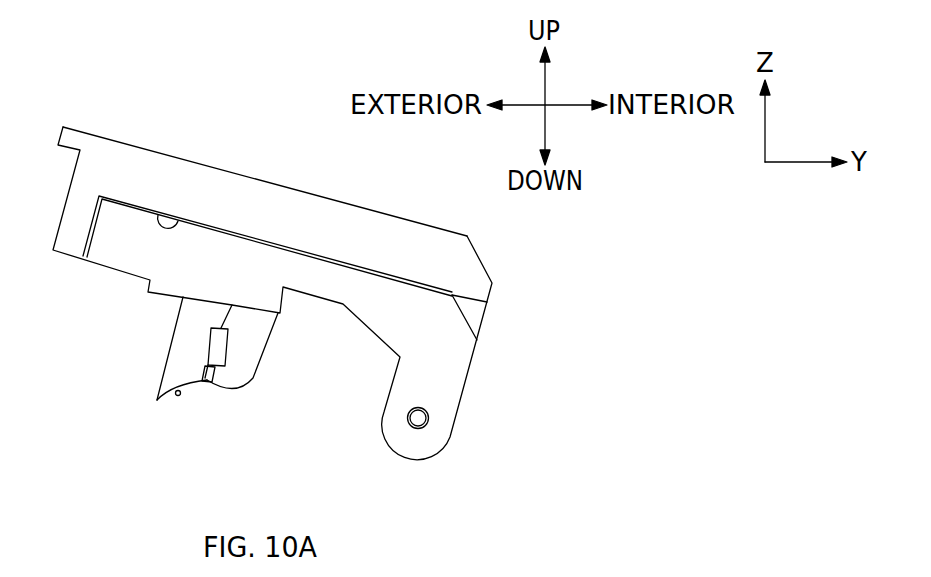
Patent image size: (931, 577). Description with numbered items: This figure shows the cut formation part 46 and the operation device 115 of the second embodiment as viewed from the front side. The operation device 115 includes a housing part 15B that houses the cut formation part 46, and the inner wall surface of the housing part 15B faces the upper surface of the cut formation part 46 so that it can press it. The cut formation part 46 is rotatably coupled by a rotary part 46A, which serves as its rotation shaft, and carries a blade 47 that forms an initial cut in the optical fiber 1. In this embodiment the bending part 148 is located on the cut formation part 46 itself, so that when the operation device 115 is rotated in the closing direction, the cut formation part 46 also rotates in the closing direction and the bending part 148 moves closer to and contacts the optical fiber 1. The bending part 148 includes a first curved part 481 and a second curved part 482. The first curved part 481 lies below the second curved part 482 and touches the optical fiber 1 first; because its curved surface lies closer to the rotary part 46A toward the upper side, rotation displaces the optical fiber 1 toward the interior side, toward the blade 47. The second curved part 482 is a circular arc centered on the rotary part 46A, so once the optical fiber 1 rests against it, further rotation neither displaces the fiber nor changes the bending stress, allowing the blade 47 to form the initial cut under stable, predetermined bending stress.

The operation device 115 is at (125, 143).
The housing part 15B is at (171, 233).
The cut formation part 46 is at (222, 250).
The bending part 148 is at (172, 344).
The blade 47 is at (222, 347).
The second curved part 482 is at (213, 384).
The first curved part 481 is at (190, 388).
The optical fiber 1 is at (176, 400).
The rotary part 46A is at (428, 418).